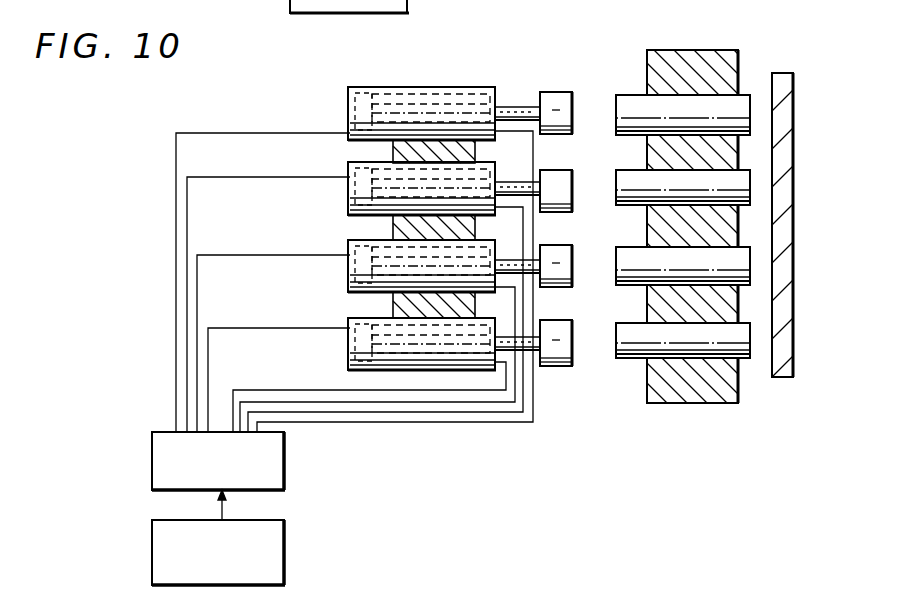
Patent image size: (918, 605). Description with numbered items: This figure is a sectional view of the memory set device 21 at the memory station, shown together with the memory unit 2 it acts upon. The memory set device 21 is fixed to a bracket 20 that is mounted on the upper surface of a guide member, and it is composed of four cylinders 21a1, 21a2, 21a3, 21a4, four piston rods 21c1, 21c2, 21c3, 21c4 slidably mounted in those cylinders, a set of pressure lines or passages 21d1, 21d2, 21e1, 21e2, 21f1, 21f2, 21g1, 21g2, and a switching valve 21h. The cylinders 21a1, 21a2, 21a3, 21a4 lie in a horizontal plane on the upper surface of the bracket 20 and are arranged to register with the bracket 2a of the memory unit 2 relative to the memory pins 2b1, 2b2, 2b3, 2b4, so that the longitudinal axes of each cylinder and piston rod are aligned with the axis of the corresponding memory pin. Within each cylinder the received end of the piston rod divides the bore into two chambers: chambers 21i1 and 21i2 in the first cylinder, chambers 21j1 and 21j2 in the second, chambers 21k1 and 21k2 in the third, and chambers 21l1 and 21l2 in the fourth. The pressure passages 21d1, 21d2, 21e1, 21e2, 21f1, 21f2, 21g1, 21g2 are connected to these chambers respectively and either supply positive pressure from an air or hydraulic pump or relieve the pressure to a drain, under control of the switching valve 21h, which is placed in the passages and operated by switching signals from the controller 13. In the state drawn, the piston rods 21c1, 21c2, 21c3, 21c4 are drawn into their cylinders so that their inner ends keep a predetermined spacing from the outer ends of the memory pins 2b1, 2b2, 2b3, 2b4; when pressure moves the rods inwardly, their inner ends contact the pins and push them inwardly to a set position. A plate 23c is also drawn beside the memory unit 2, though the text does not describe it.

The memory unit 2 is at (770, 52).
The bracket 2a is at (692, 50).
The memory pin 2b1 is at (628, 94).
The memory pin 2b2 is at (632, 204).
The memory pin 2b3 is at (632, 284).
The memory pin 2b4 is at (633, 358).
The controller 13 is at (286, 554).
The bracket 20 is at (394, 228).
The memory set device 21 is at (409, 84).
The cylinder 21a1 is at (347, 118).
The cylinder 21a2 is at (347, 206).
The cylinder 21a3 is at (347, 280).
The cylinder 21a4 is at (347, 345).
The piston rod 21c1 is at (556, 90).
The piston rod 21c2 is at (574, 182).
The piston rod 21c3 is at (556, 288).
The piston rod 21c4 is at (553, 370).
The pressure passage 21d1 is at (190, 132).
The pressure passage 21d2 is at (534, 172).
The pressure passage 21e1 is at (189, 176).
The pressure passage 21e2 is at (524, 250).
The pressure passage 21f1 is at (198, 254).
The pressure passage 21f2 is at (514, 318).
The pressure passage 21g1 is at (208, 327).
The pressure passage 21g2 is at (235, 389).
The switching valve 21h is at (286, 470).
The chamber 21i1 is at (349, 92).
The chamber 21i2 is at (465, 90).
The chamber 21j1 is at (350, 195).
The chamber 21j2 is at (355, 168).
The chamber 21k1 is at (350, 288).
The chamber 21k2 is at (398, 300).
The chamber 21l1 is at (350, 372).
The chamber 21l2 is at (422, 372).
The plate 23c is at (796, 176).